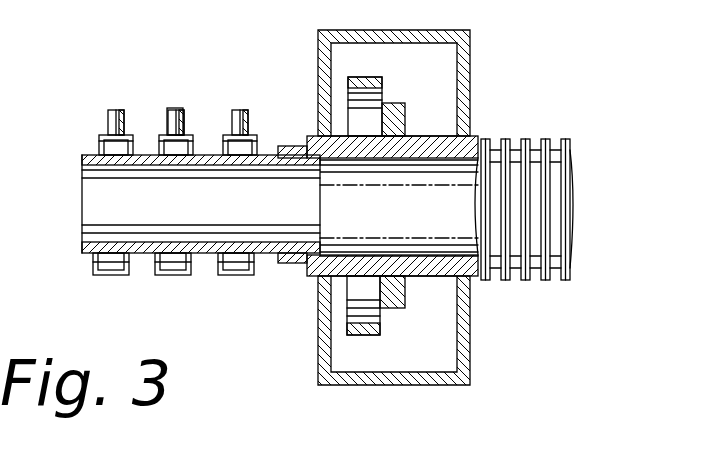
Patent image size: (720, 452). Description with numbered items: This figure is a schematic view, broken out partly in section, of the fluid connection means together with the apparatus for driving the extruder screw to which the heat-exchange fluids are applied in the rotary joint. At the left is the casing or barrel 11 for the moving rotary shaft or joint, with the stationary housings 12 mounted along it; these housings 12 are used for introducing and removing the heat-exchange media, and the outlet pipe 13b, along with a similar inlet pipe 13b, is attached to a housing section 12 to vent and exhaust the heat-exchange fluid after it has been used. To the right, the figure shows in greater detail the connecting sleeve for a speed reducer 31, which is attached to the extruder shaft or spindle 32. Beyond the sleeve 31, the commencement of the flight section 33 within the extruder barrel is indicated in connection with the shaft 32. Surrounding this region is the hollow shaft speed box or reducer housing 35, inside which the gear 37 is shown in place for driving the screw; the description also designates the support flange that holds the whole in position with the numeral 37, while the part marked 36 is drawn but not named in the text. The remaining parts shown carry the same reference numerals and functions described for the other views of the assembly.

The casing 11 is at (85, 157).
The stationary housings 12 is at (100, 135).
The outlet pipe 13b is at (167, 110).
The connecting sleeve for a speed reducer 31 is at (290, 150).
The extruder shaft 32 is at (478, 136).
The flight section 33 is at (579, 130).
The speed reducer housing 35 is at (432, 31).
The insert block 36 is at (382, 85).
The gear 37 is at (406, 117).